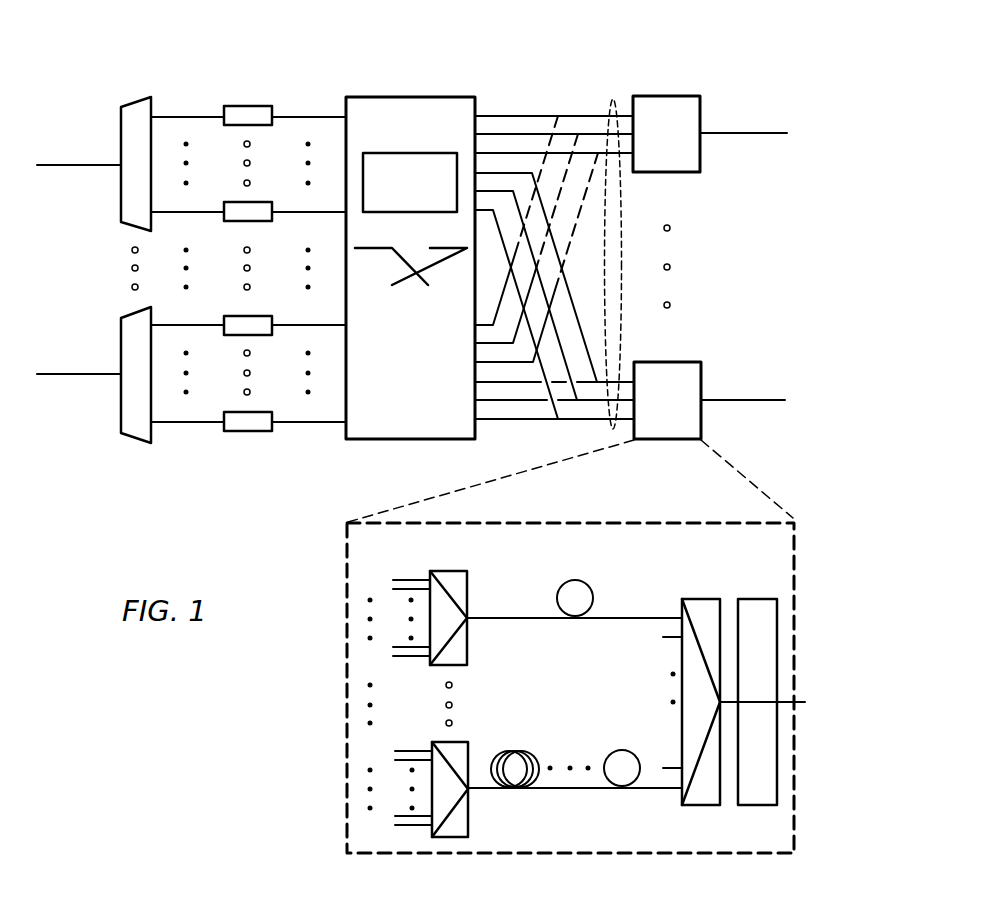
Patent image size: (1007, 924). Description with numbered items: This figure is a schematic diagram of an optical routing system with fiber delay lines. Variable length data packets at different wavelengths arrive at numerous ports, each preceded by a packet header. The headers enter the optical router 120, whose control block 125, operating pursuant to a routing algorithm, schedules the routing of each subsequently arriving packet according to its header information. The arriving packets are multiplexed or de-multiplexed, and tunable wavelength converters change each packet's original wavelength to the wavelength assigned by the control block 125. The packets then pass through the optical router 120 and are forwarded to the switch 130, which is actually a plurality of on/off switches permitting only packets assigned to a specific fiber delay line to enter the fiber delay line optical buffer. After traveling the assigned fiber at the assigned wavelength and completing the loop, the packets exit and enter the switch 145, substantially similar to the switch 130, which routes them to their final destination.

The optical router 120 is at (399, 93).
The control block 125 is at (410, 150).
The switch 130 is at (612, 102).
The switch 145 is at (757, 598).